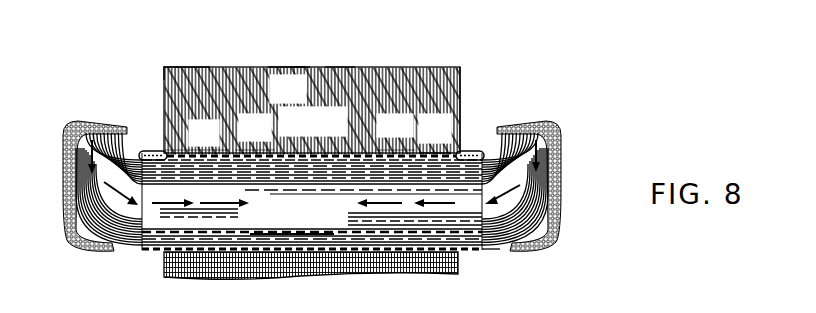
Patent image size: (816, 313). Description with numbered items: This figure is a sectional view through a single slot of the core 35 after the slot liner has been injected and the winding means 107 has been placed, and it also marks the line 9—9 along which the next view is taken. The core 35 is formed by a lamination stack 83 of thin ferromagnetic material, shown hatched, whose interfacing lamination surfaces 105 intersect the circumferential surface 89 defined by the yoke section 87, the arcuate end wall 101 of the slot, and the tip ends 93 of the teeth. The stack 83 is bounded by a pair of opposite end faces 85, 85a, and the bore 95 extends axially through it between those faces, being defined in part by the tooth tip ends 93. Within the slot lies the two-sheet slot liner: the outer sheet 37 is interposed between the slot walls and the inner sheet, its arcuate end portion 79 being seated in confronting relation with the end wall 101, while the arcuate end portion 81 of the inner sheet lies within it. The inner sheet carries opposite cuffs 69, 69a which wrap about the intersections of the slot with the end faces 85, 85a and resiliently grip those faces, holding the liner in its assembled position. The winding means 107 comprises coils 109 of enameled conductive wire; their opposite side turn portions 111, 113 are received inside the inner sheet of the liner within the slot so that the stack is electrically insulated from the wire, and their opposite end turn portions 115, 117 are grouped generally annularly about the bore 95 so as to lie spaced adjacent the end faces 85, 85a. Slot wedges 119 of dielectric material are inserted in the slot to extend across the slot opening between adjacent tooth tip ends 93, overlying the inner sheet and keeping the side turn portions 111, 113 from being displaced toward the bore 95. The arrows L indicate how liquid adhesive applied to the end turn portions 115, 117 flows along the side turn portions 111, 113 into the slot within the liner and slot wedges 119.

The core 35 is at (458, 48).
The sheet 37 is at (447, 138).
The end portion 79 is at (255, 134).
The end portion 81 is at (197, 136).
The lamination stack 83 is at (300, 100).
The end face 85 is at (462, 82).
The end face 85a is at (165, 69).
The yoke section 87 is at (338, 67).
The circumferential surface 89 is at (298, 67).
The tip end 93 is at (450, 263).
The bore 95 is at (180, 264).
The cuff 69 is at (467, 150).
The cuff 69a is at (150, 152).
The end wall 101 is at (396, 132).
The interfacing lamination surfaces 105 is at (200, 67).
The winding means 107 is at (627, 113).
The coils 109 is at (566, 221).
The side turn portion 111 is at (312, 201).
The side turn portion 113 is at (350, 228).
The end turn portion 115 is at (76, 136).
The end turn portion 117 is at (566, 157).
The slot wedges 119 is at (485, 252).
The line 9— 9 is at (284, 122).
The liquid adhesive material flow arrows L is at (89, 110).